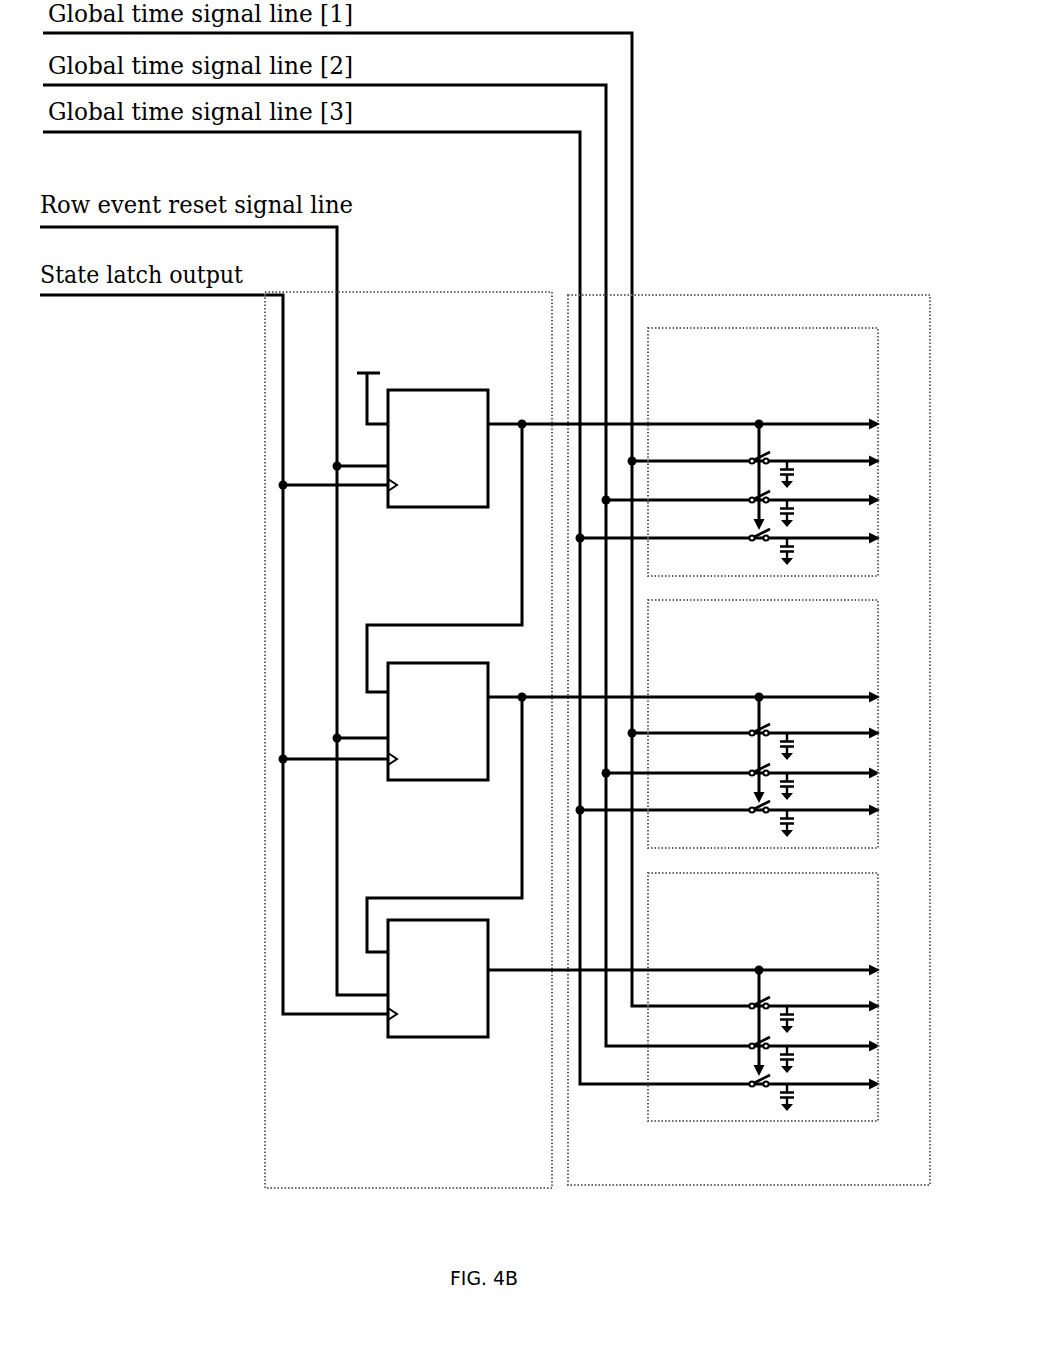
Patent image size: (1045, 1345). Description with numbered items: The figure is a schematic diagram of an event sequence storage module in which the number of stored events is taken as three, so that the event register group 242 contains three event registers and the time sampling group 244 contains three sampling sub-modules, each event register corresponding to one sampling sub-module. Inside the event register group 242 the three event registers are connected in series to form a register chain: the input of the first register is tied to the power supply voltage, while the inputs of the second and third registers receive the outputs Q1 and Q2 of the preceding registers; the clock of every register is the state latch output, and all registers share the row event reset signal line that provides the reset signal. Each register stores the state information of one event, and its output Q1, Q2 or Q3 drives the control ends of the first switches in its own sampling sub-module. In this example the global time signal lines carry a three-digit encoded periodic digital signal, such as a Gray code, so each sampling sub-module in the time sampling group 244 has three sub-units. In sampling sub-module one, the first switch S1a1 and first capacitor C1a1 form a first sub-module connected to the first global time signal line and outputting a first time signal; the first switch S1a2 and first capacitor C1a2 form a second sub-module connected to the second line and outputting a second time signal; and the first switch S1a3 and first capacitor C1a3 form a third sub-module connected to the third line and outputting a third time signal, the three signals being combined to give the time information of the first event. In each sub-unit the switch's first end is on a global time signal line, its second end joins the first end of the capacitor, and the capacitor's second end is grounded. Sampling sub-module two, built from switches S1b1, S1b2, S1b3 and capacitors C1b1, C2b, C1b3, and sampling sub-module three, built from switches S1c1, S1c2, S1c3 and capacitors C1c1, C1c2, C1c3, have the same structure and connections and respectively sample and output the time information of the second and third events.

The event register group 242 is at (408, 740).
The time sampling group 244 is at (709, 740).
The output of event register 1 Q1 is at (703, 425).
The output of event register 2 Q2 is at (703, 698).
The output of event register 3 Q3 is at (703, 971).
The first switch S1a1 is at (746, 466).
The first switch S1a2 is at (746, 505).
The first switch S1a3 is at (746, 543).
The first switch S1b1 is at (746, 738).
The first switch S1b2 is at (746, 778).
The first switch S1b3 is at (746, 815).
The first switch S1c1 is at (746, 1011).
The first switch S1c2 is at (746, 1051).
The first switch S1c3 is at (746, 1089).
The first capacitor C1a1 is at (805, 474).
The first capacitor C1a2 is at (805, 513).
The first capacitor C1a3 is at (805, 551).
The first capacitor C1b1 is at (805, 746).
The first capacitor C2b is at (804, 786).
The first capacitor C1b3 is at (805, 823).
The first capacitor C1c1 is at (805, 1019).
The first capacitor C1c2 is at (805, 1059).
The first capacitor C1c3 is at (805, 1097).